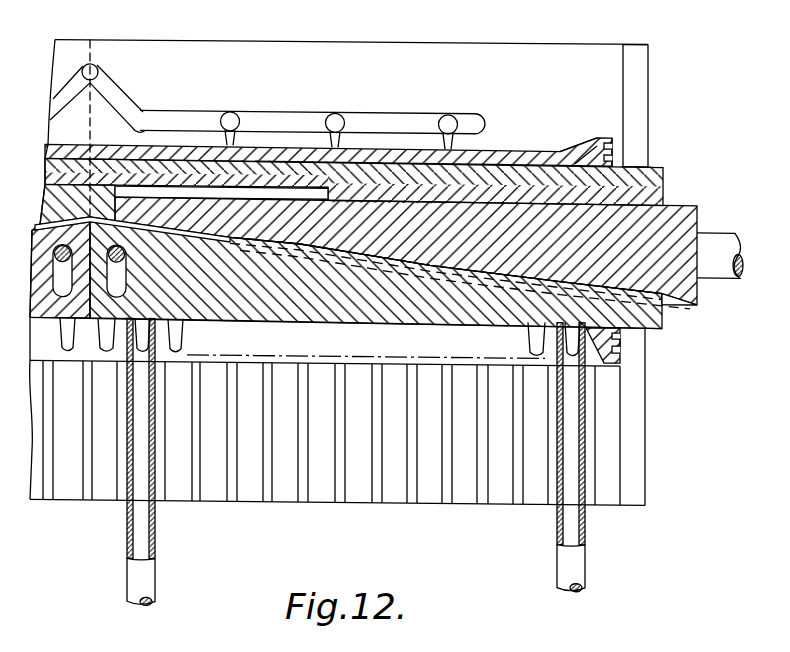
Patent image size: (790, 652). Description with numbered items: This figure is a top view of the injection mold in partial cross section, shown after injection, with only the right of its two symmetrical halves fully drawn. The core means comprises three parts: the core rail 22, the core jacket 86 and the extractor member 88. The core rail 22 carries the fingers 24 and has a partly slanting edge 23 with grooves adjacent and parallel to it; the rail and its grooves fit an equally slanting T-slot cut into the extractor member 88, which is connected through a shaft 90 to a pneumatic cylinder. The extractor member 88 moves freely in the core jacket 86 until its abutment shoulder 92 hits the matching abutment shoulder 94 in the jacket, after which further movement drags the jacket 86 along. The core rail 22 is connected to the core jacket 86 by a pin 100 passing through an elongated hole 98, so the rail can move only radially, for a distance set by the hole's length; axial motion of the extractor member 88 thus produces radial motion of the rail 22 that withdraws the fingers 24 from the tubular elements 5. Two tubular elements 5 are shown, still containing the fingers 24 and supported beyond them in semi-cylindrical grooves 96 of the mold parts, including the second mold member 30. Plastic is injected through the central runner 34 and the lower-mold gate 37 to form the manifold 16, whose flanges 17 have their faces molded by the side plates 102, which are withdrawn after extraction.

The second mold member 30 is at (465, 45).
The side plate 102 is at (640, 64).
The lower-mold gate 37 is at (230, 110).
The manifold 16 is at (285, 153).
The central runner 34 is at (380, 121).
The manifold flange 17 is at (612, 122).
The core jacket 86 is at (653, 176).
The shaft 90 is at (720, 238).
The abutment shoulder 92 is at (133, 196).
The abutment shoulder 94 is at (322, 194).
The slanting edge 23 is at (410, 252).
The pin 100 is at (125, 252).
The elongated hole 98 is at (127, 284).
The extractor member 88 is at (687, 283).
The core rail 22 is at (653, 318).
The fingers 24 is at (182, 354).
The semi-cylindrical grooves 96 is at (242, 495).
The tubular elements 5 is at (157, 541).